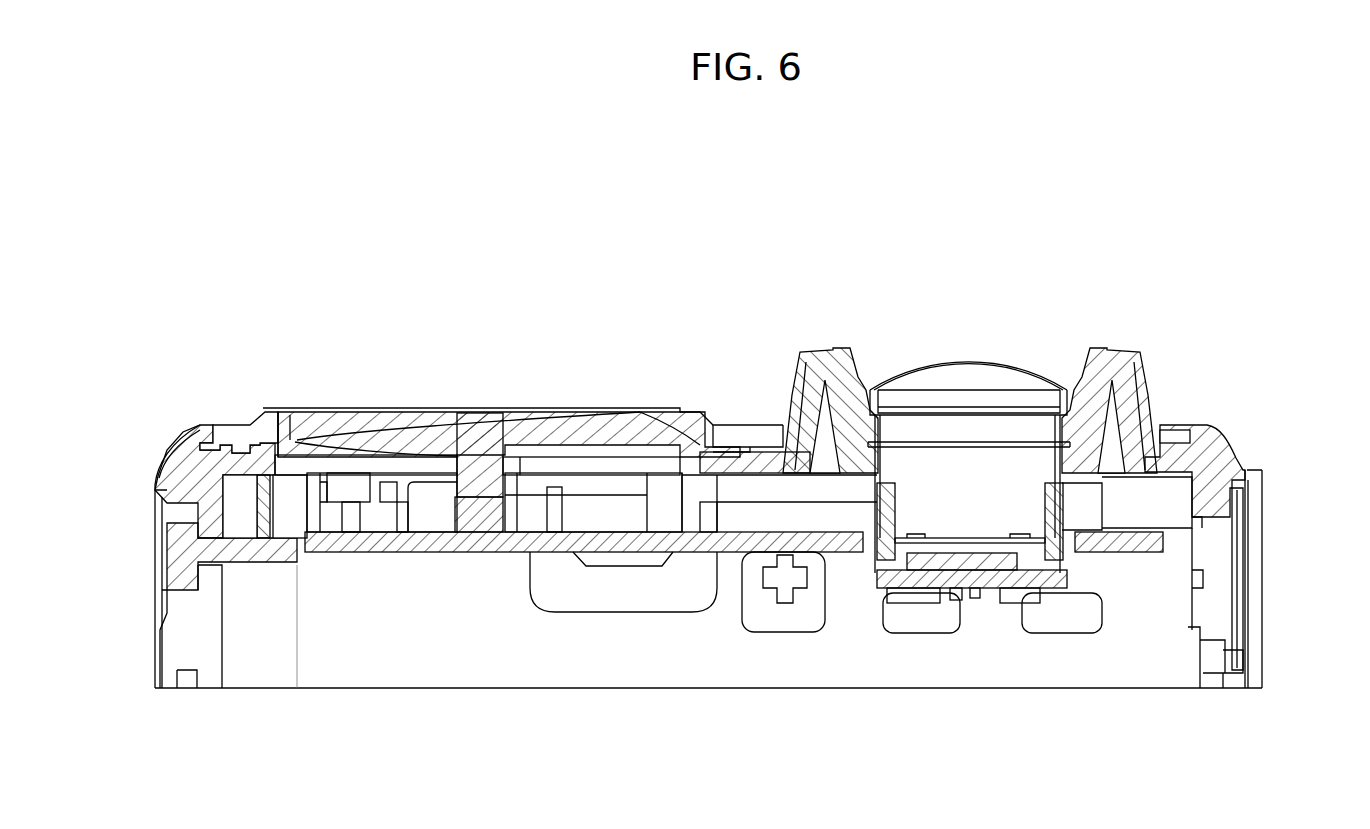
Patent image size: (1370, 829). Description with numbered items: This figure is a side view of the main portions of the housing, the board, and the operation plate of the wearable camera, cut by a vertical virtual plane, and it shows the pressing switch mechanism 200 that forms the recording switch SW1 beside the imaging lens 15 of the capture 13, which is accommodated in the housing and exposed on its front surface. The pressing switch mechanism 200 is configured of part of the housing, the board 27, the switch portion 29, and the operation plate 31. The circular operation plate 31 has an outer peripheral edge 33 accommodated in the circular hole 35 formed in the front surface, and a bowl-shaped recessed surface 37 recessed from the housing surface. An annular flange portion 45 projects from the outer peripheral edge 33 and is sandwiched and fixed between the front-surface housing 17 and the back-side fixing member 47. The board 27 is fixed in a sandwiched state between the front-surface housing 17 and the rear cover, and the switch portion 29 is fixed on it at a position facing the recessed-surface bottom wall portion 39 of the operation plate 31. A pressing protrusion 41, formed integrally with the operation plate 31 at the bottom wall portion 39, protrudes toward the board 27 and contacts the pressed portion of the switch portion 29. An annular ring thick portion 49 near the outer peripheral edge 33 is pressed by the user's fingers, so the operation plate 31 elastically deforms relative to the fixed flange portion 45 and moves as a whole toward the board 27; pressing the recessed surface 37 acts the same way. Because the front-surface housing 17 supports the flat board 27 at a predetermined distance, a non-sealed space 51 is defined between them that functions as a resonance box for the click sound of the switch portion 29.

The recording switch SW1 is at (508, 402).
The outer peripheral edge 33 is at (255, 423).
The ring thick portion 49 is at (297, 408).
The recessed surface 37 is at (368, 440).
The pressing protrusion 41 is at (443, 456).
The operation plate 31 is at (600, 428).
The circular hole 35 is at (660, 440).
The flange portion 45 is at (710, 425).
The imaging lens 15 is at (982, 362).
The front-surface housing 17 is at (1267, 521).
The pressing switch mechanism 200 is at (367, 626).
The switch portion 29 is at (455, 511).
The recessed-surface bottom wall portion 39 is at (507, 458).
The non-sealed space 51 is at (577, 618).
The board 27 is at (697, 487).
The back-side fixing member 47 is at (704, 465).
The capture 13 is at (992, 622).